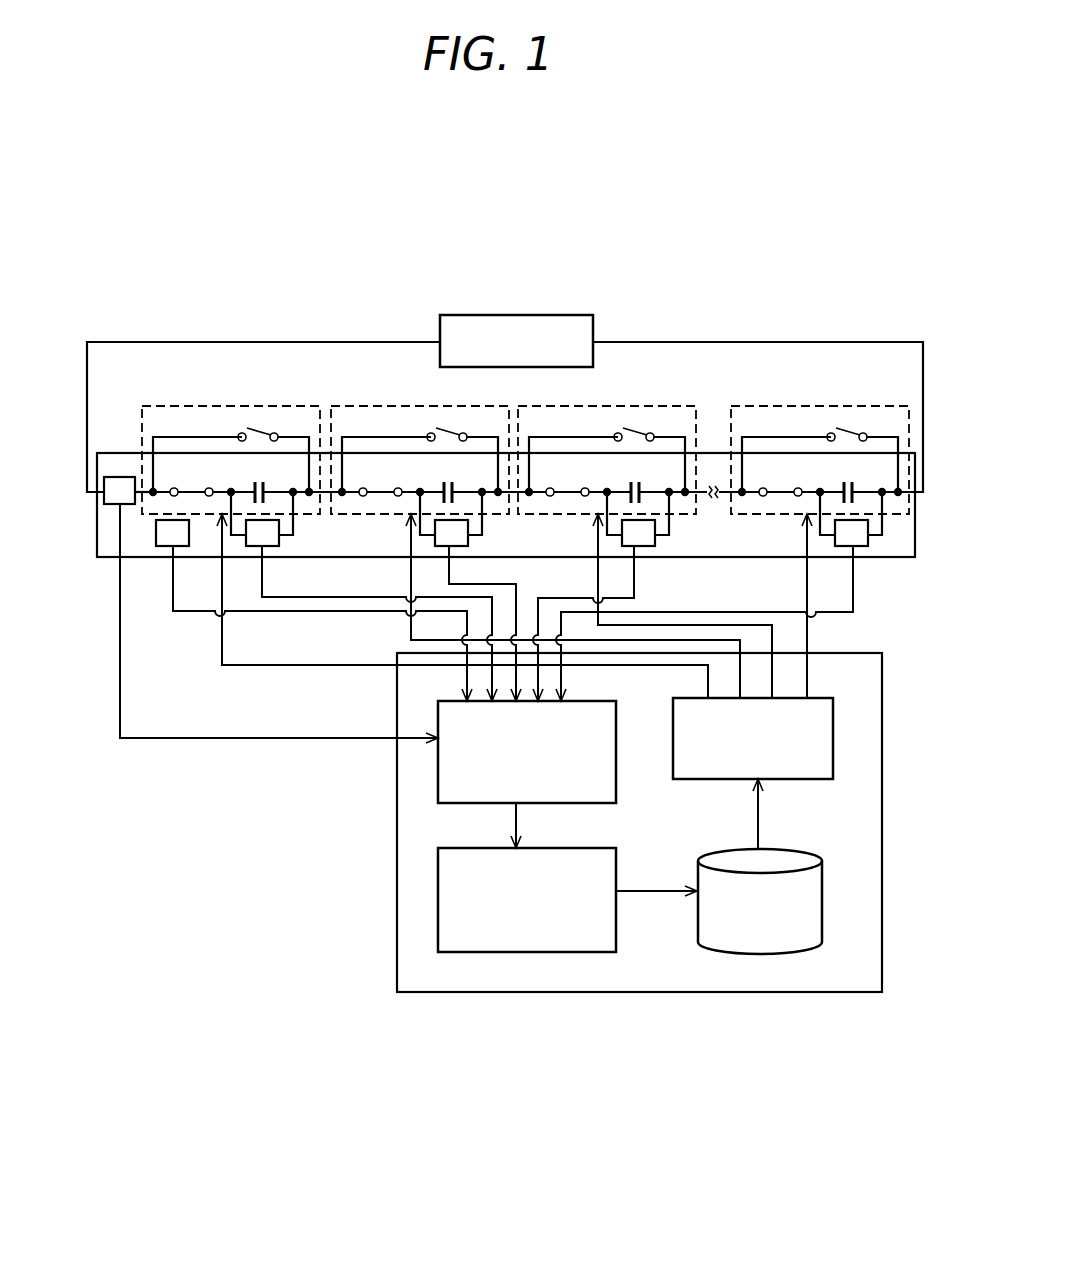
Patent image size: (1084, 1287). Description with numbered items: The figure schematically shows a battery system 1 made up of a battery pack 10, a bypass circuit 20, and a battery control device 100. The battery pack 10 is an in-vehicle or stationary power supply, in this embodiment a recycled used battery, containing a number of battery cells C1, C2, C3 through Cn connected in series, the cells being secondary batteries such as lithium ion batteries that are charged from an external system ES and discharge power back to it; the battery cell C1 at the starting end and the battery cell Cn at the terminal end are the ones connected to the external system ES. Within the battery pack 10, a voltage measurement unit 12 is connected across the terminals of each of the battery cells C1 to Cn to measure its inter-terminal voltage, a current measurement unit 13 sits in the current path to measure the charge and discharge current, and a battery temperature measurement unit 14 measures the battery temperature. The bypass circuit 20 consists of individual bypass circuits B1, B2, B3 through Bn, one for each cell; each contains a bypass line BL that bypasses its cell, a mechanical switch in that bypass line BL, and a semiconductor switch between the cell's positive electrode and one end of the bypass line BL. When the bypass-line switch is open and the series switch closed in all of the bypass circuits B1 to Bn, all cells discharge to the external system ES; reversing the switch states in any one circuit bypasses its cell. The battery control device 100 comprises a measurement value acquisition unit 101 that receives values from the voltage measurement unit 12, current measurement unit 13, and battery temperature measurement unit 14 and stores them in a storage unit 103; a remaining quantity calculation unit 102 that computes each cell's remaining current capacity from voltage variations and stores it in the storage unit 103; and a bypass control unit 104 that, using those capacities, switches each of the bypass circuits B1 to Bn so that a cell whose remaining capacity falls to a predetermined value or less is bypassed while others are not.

The battery system 1 is at (765, 305).
The battery pack 10 is at (706, 450).
The voltage measurement unit 12 is at (257, 547).
The current measurement unit 13 is at (112, 506).
The battery temperature measurement unit 14 is at (163, 547).
The bypass circuit 20 is at (800, 402).
The battery control device 100 is at (520, 821).
The measurement value acquisition unit 101 is at (437, 753).
The remaining quantity calculation unit 102 is at (437, 890).
The storage unit 103 is at (763, 953).
The bypass control unit 104 is at (834, 735).
The external system ES is at (519, 316).
The bypass line BL is at (205, 437).
The bypass circuit B1 is at (231, 455).
The bypass circuit B2 is at (419, 455).
The bypass circuit B3 is at (607, 455).
The bypass circuit Bn is at (820, 455).
The battery cell C1 is at (262, 481).
The battery cell C2 is at (451, 481).
The battery cell C3 is at (638, 481).
The battery cell Cn is at (851, 481).